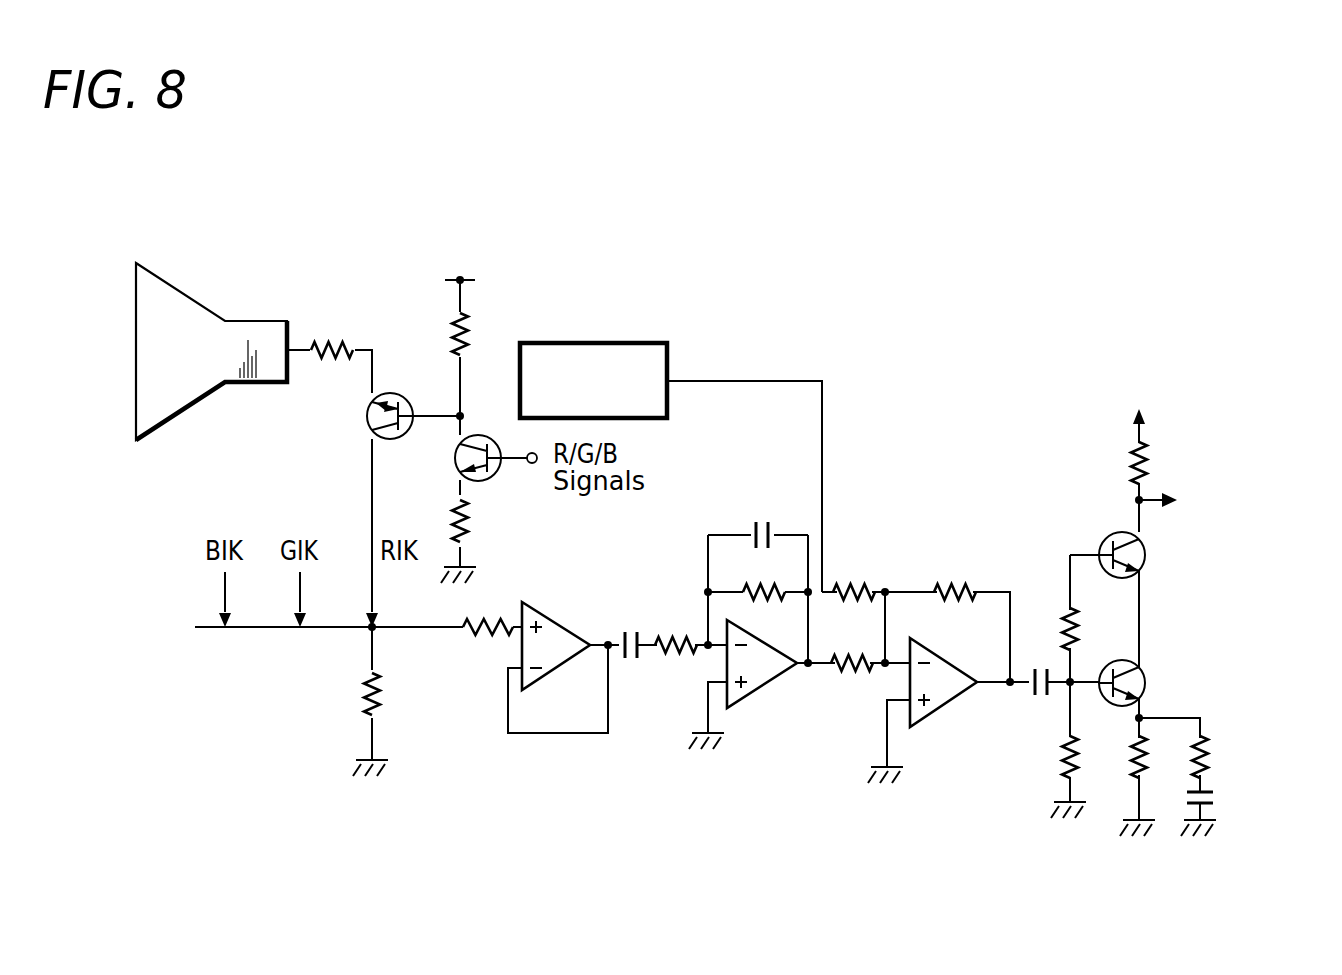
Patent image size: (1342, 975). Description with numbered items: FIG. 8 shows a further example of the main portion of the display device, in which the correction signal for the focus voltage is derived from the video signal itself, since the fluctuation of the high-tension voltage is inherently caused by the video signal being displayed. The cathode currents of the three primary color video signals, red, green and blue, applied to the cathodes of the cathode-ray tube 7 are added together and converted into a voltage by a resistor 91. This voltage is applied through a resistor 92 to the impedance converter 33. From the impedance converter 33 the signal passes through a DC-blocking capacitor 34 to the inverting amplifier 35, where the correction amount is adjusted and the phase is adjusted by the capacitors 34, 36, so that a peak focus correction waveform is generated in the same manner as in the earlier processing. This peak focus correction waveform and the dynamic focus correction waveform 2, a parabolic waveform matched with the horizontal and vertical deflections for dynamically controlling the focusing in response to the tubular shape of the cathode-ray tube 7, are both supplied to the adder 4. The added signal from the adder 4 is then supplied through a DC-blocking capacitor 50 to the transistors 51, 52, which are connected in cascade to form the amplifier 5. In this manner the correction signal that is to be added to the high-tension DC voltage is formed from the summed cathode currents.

The cathode-ray tube 7 is at (248, 321).
The dynamic focus (DF) correction waveform 2 is at (670, 365).
The impedance converter (IC) 33 is at (568, 625).
The resistor 92 is at (480, 647).
The DC-blocking capacitor 34 is at (632, 665).
The capacitor 36 is at (765, 520).
The inverting amplifier (IC) 35 is at (755, 690).
The adder (IC) 4 is at (940, 712).
The DC-blocking capacitor 50 is at (1036, 697).
The amplifier 5 is at (1185, 604).
The transistor 52 is at (1148, 556).
The transistor 51 is at (1148, 685).
The resistor 91 is at (388, 698).